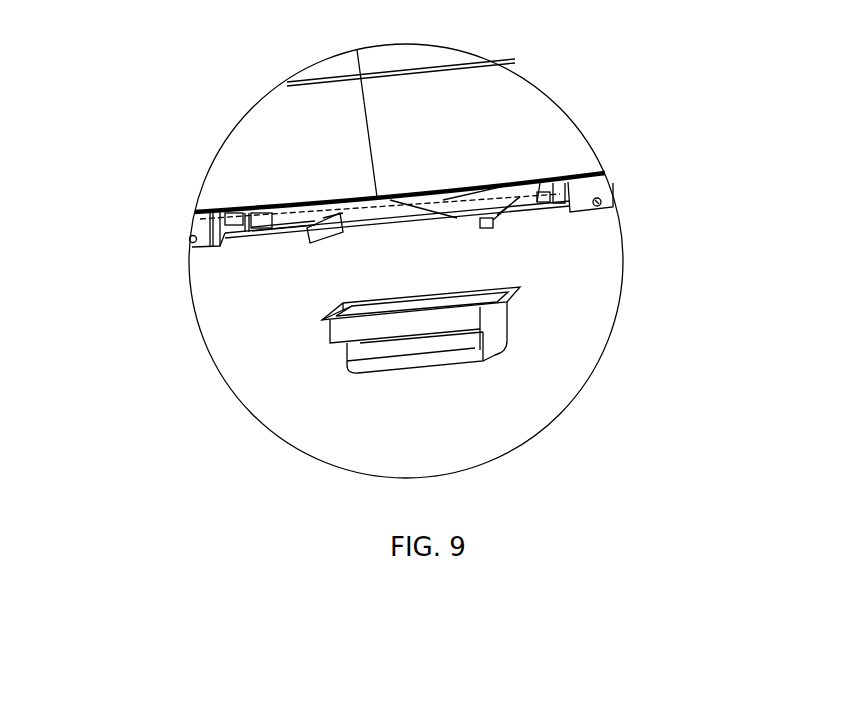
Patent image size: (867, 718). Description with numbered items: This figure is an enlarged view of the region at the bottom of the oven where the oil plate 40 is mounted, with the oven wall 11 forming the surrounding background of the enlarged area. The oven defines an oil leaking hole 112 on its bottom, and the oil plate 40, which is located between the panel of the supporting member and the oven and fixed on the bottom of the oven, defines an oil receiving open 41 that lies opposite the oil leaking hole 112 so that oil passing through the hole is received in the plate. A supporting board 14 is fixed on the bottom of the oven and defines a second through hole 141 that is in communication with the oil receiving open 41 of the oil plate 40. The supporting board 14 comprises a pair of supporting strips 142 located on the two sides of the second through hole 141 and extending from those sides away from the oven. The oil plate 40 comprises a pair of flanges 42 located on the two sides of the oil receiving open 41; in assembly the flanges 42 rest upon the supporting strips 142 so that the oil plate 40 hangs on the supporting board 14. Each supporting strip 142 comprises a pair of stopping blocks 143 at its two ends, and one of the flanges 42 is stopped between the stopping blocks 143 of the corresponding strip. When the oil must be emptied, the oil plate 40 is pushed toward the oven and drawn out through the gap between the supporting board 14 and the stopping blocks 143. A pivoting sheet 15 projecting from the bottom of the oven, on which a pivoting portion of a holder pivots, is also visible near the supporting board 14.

The housing panel 11 is at (527, 133).
The oil leaking hole 112 is at (417, 210).
The supporting board 14 is at (548, 178).
The pivoting sheet 15 is at (600, 196).
The second through hole 141 is at (360, 217).
The supporting strip 142 is at (323, 202).
The stopping block 143 is at (312, 227).
The oil plate 40 is at (523, 373).
The oil receiving open 41 is at (462, 315).
The flange 42 is at (508, 302).